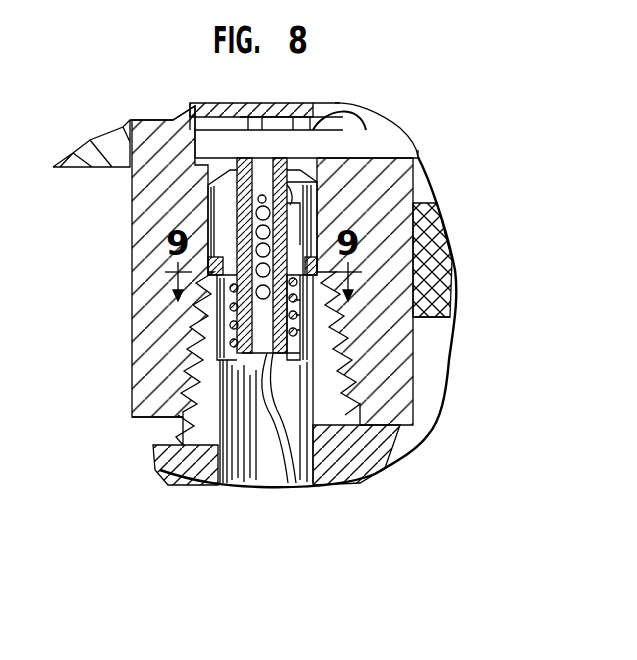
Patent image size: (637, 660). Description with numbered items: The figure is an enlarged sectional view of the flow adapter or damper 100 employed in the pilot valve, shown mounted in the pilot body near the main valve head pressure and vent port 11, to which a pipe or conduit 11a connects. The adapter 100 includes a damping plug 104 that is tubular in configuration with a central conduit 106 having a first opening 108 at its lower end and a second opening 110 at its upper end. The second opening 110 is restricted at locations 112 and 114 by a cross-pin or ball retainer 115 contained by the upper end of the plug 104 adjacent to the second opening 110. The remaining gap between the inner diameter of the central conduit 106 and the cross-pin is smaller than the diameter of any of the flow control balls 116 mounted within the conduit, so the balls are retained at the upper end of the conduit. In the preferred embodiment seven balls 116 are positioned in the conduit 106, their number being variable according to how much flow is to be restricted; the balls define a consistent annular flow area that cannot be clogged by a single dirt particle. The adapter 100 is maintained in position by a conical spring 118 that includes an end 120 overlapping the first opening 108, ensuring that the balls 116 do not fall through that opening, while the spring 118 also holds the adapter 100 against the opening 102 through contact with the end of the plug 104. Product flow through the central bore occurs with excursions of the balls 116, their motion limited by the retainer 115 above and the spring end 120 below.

The main valve head pressure and vent port 11 is at (183, 428).
The pipe or conduit 11a is at (224, 486).
The flow adapter or damper 100 is at (225, 215).
The opening 102 is at (240, 148).
The damping plug 104 is at (300, 203).
The central conduit 106 is at (267, 198).
The first opening 108 is at (298, 483).
The second opening 110 is at (350, 108).
The location 112 is at (243, 157).
The location 114 is at (285, 168).
The cross-pin or ball retainer 115 is at (300, 232).
The flow control balls 116 is at (292, 300).
The conical spring 118 is at (208, 262).
The spring end 120 is at (284, 483).